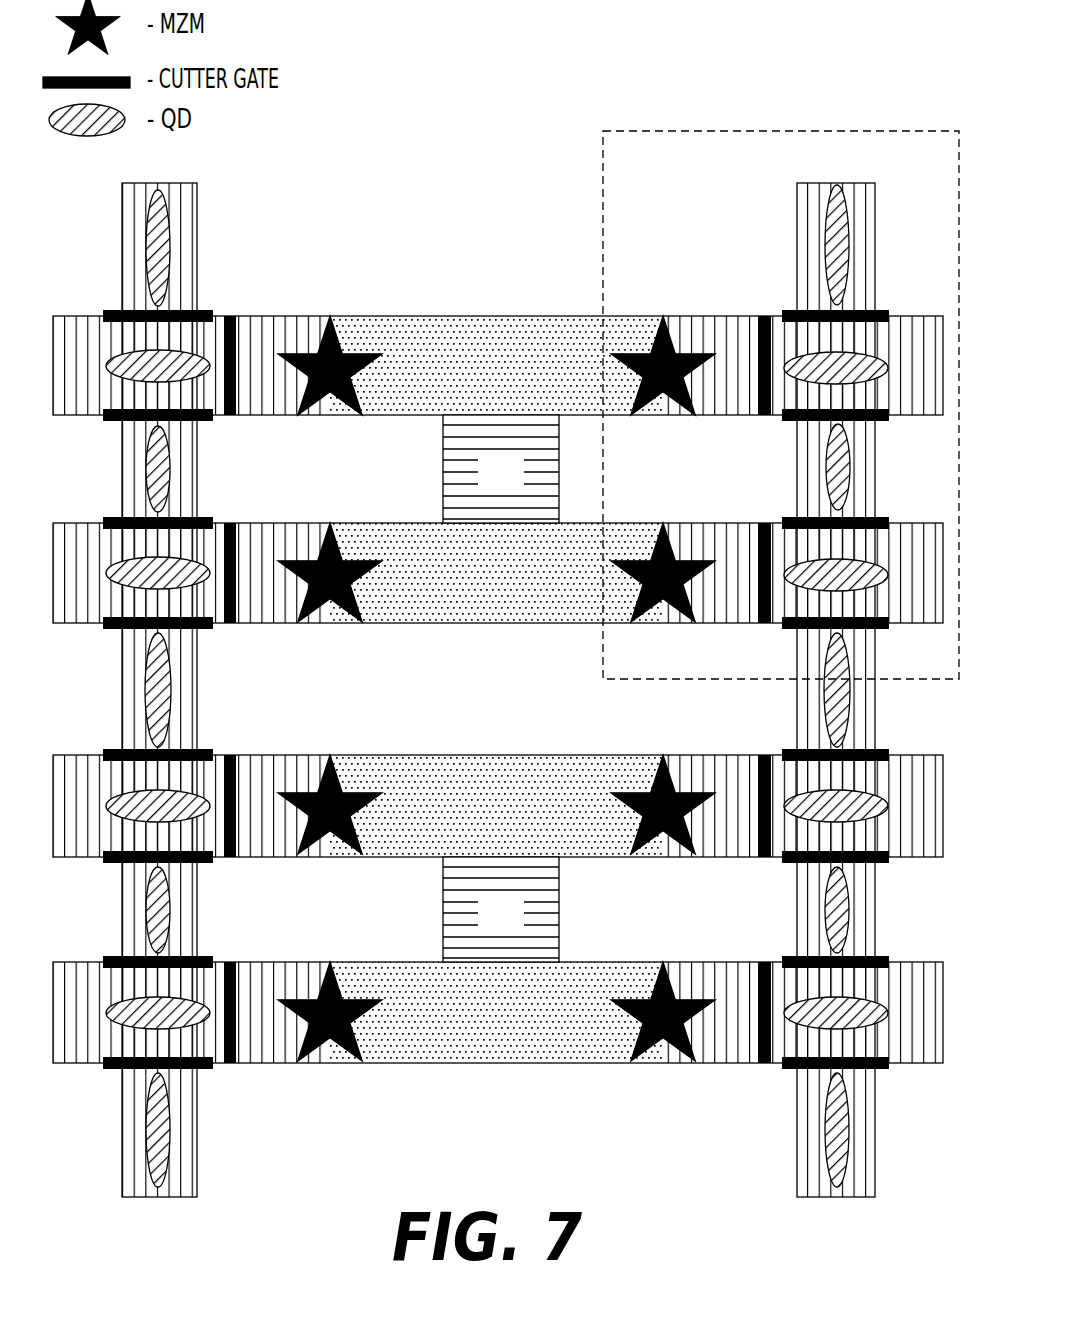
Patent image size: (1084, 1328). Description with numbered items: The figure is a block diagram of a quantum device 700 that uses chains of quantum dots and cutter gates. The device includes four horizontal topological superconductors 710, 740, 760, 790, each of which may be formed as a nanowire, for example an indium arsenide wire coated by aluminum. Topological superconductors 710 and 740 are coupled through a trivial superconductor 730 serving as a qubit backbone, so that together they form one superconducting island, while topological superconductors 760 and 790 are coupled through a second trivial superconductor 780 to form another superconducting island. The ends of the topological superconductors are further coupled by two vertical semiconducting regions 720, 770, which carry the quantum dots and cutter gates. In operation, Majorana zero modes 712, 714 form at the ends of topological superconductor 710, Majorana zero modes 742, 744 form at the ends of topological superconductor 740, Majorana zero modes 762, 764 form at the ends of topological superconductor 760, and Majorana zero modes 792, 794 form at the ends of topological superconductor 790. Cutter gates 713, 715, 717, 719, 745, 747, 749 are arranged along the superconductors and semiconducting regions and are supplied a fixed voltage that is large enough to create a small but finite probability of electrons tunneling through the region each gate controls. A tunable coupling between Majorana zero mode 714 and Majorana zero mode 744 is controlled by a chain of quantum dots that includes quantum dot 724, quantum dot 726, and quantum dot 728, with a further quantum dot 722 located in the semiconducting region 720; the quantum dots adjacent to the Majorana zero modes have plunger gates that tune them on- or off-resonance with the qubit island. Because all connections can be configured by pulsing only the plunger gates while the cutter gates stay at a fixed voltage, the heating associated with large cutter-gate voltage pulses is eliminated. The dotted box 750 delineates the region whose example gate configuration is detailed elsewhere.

The quantum device 700 is at (502, 662).
The topological superconductor 710 is at (514, 382).
The Majorana zero mode 712 is at (333, 316).
The cutter gate 713 is at (232, 316).
The Majorana zero mode 714 is at (663, 316).
The cutter gate 715 is at (765, 316).
The cutter gate 717 is at (885, 311).
The cutter gate 719 is at (882, 423).
The semiconducting region 720 is at (797, 207).
The quantum dot 722 is at (835, 195).
The quantum dot 724 is at (852, 356).
The quantum dot 726 is at (828, 475).
The quantum dot 728 is at (858, 565).
The trivial superconductor 730 is at (514, 482).
The topological superconductor 740 is at (514, 589).
The Majorana zero mode 742 is at (333, 523).
The Majorana zero mode 744 is at (663, 523).
The cutter gate 745 is at (765, 523).
The cutter gate 747 is at (885, 517).
The cutter gate 749 is at (882, 630).
The dotted box 750 is at (639, 157).
The topological superconductor 760 is at (514, 816).
The Majorana zero mode 762 is at (333, 755).
The Majorana zero mode 764 is at (663, 755).
The semiconducting region 770 is at (122, 208).
The trivial superconductor 780 is at (514, 921).
The topological superconductor 790 is at (514, 1027).
The Majorana zero mode 792 is at (333, 962).
The Majorana zero mode 794 is at (663, 962).